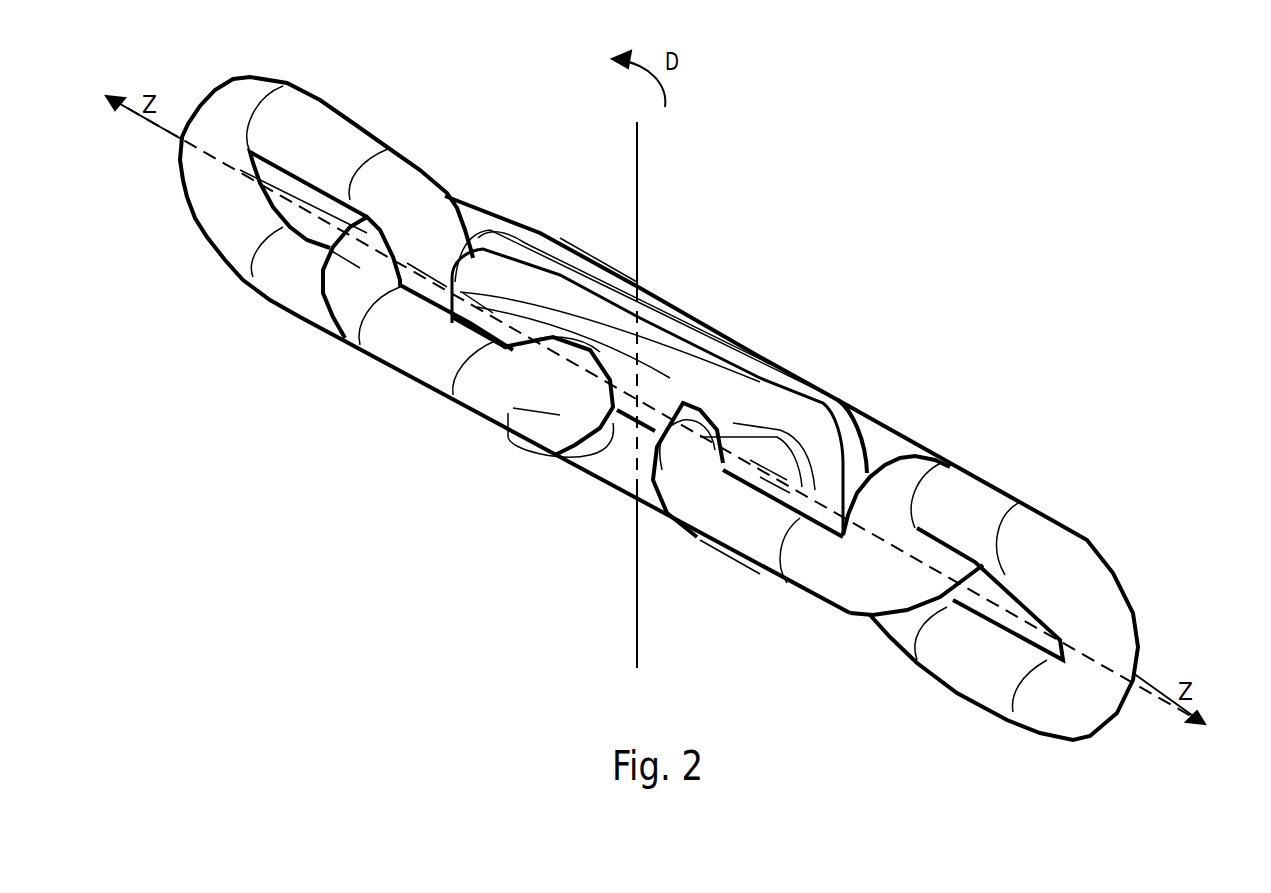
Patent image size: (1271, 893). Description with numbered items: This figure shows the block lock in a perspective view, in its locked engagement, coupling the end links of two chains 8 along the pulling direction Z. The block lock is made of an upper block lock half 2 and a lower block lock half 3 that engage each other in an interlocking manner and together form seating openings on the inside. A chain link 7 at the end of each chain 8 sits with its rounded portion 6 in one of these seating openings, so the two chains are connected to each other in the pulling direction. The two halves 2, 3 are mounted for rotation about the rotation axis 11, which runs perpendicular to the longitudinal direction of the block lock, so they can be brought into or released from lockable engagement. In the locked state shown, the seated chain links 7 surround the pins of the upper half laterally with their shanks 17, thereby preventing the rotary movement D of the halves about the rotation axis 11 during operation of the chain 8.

The upper block lock half 2 is at (783, 386).
The lower block lock half 3 is at (612, 470).
The rounded portion 6 is at (570, 397).
The chain link 7 is at (546, 234).
The chain 8 is at (357, 105).
The rotation axis 11 is at (637, 151).
The shanks 17 is at (417, 358).